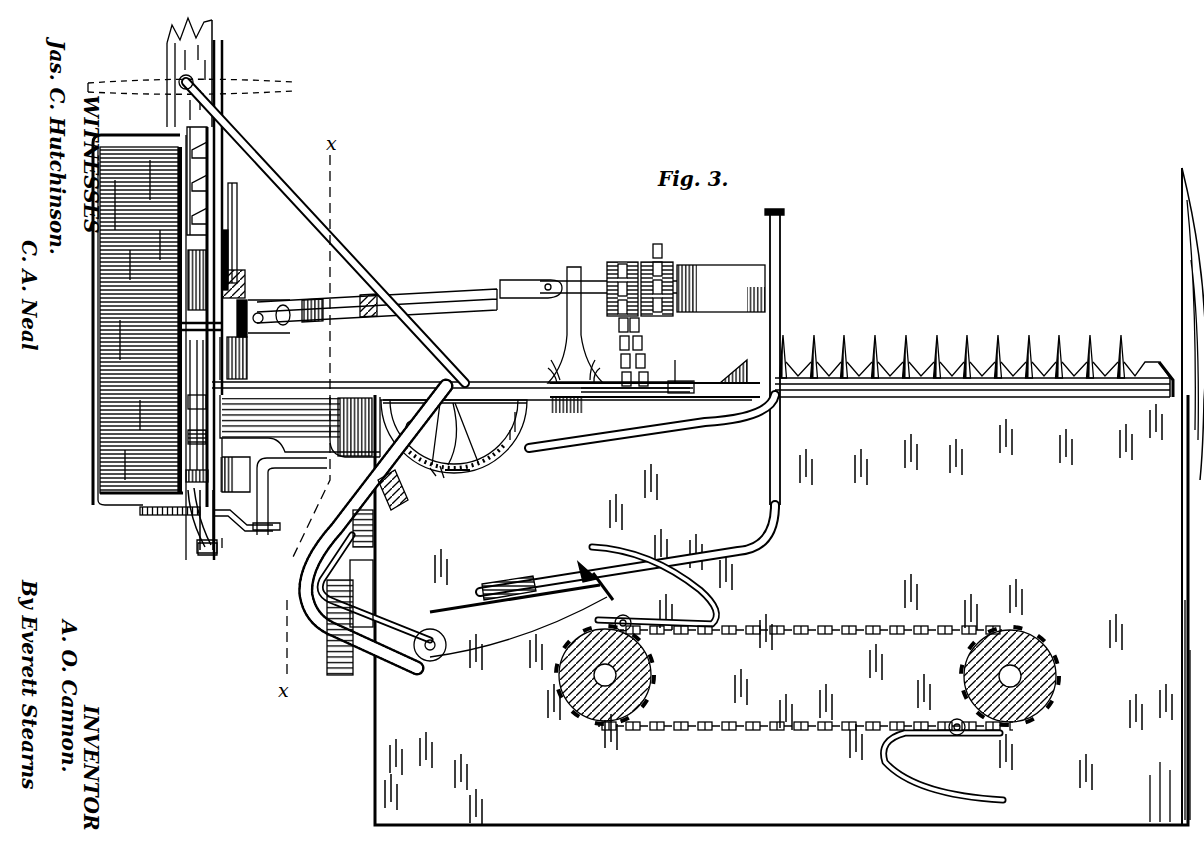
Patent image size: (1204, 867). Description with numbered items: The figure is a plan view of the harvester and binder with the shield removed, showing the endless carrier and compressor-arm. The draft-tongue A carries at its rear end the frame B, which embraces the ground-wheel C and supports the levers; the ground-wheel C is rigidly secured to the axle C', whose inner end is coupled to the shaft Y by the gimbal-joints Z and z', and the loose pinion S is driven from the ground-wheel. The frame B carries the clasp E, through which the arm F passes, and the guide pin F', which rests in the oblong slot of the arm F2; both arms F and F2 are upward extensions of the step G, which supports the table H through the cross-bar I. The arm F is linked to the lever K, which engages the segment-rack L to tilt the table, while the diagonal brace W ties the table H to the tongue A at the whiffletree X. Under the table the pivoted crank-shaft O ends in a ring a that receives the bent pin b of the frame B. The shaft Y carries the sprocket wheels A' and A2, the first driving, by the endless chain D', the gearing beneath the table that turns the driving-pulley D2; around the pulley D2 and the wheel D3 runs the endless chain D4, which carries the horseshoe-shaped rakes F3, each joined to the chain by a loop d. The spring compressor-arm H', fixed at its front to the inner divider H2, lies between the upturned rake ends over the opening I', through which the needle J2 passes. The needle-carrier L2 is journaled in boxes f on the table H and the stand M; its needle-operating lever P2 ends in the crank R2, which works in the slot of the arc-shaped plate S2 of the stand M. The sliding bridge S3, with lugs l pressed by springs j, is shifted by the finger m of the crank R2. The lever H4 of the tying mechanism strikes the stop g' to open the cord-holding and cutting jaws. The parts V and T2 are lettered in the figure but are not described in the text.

The whiffletree X is at (246, 82).
The draft-tongue A is at (207, 289).
The frame B is at (140, 134).
The segment-rack L is at (212, 162).
The clasp E is at (238, 222).
The arm F is at (244, 260).
The gimbal-joint Z is at (285, 305).
The diagonal brace W is at (352, 233).
The shaft Y is at (435, 294).
The gimbal-joint z' is at (530, 269).
The sprocket or pulley wheel A' is at (625, 270).
The sprocket or pulley wheel A2 is at (674, 263).
The inner divider H2 is at (787, 292).
The endless chain D' is at (645, 315).
The ground-wheel C is at (139, 320).
The axle C' is at (213, 303).
The step G is at (248, 345).
The cross bar V is at (355, 382).
The boxes f is at (436, 384).
The arm F2 is at (230, 450).
The cross-bar I is at (300, 426).
The lever K is at (715, 496).
The table H is at (782, 776).
The springs j is at (447, 434).
The stand M is at (453, 436).
The sliding bridge S3 is at (454, 434).
The rear face or plate S2 is at (495, 462).
The finger m is at (423, 486).
The lug l is at (444, 485).
The arm T2 is at (460, 472).
The crank-shaft O is at (303, 462).
The needle-carrier L2 is at (335, 500).
The guide pin F' is at (269, 509).
The stop g' is at (375, 528).
The crank R2 is at (404, 502).
The pinion S is at (190, 525).
The ring a is at (250, 530).
The bent pin b is at (232, 540).
The needle-operating lever P2 is at (299, 590).
The lever H4 is at (327, 640).
The needle or binder-arm J2 is at (448, 646).
The opening or slot I' is at (518, 621).
The compressor-arm H' is at (610, 551).
The rakes F3 is at (708, 560).
The loop or twist d is at (632, 618).
The driving-pulley D2 is at (605, 675).
The endless chain D4 is at (850, 590).
The pulley or wheel D3 is at (1010, 676).